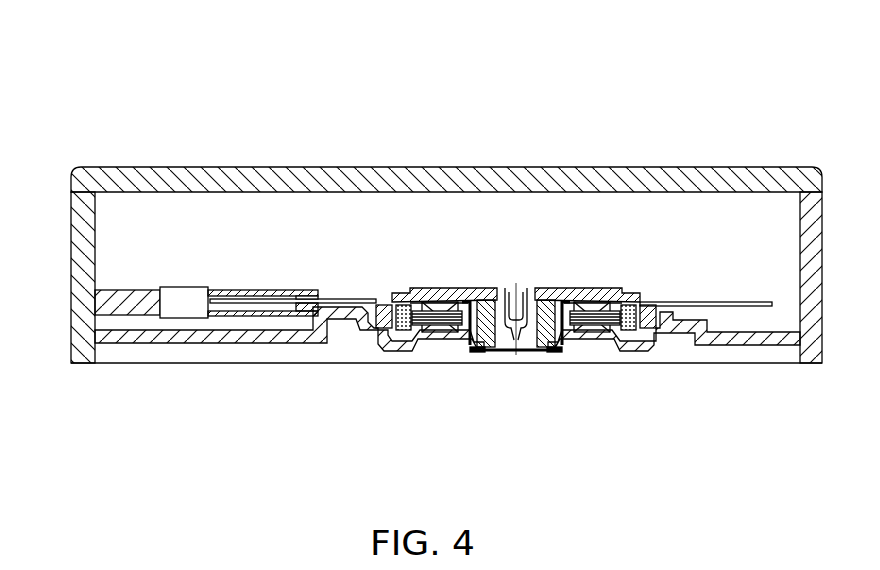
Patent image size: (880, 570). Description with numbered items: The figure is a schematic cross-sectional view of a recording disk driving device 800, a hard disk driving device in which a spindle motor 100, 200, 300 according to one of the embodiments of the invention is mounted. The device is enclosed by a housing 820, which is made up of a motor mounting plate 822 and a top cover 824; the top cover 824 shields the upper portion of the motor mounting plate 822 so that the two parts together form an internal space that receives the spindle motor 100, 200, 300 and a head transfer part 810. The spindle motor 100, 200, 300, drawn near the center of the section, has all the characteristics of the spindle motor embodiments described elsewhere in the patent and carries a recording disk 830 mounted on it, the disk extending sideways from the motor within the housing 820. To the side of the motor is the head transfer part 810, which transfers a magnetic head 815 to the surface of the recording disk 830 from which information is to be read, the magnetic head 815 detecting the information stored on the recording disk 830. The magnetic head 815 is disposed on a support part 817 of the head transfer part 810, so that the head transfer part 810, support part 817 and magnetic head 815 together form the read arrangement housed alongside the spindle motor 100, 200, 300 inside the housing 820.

The recording disk driving device 800 is at (430, 44).
The housing 820 is at (63, 248).
The top cover 824 is at (253, 182).
The motor mounting plate 822 is at (812, 337).
The head transfer part 810 is at (183, 331).
The support part 817 is at (262, 318).
The magnetic head 815 is at (326, 318).
The recording disk 830 is at (718, 300).
The spindle motor 100 is at (534, 252).
The spindle motor 200 is at (516, 319).
The spindle motor 300 is at (516, 319).